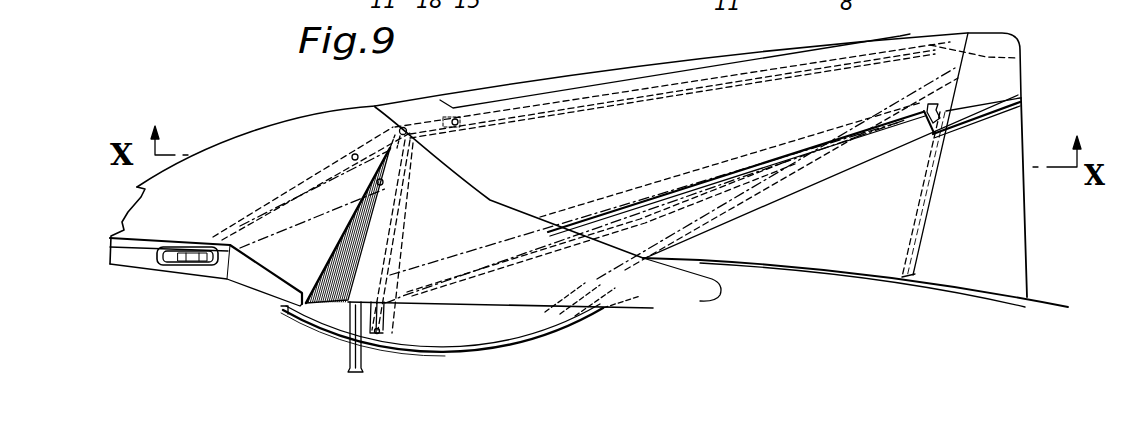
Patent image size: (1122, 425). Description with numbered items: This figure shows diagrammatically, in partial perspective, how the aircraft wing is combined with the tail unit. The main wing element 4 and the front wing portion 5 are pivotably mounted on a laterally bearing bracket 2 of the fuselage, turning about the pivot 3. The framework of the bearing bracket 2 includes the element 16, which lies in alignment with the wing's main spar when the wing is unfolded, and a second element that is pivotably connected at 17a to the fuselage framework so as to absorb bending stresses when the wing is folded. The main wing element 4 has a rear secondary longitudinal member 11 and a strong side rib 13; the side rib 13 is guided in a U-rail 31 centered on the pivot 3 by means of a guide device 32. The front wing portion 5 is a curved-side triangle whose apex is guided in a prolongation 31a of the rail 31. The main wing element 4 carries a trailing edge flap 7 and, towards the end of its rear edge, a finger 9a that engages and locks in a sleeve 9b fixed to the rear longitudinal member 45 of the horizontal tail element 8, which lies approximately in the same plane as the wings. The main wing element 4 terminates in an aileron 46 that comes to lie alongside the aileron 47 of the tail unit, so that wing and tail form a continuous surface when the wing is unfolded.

The bearing bracket 2 is at (503, 213).
The pivot 3 is at (403, 127).
The main wing element 4 is at (595, 100).
The front wing portion 5 is at (280, 137).
The trailing edge flap 7 is at (773, 190).
The horizontal tail element 8 is at (828, 247).
The finger 9a is at (933, 107).
The sleeve 9b is at (1004, 100).
The rear secondary longitudinal member 11 is at (714, 168).
The side rib 13 is at (393, 208).
The bracket framework element 16 is at (347, 360).
The pivotal connection 17a is at (187, 262).
The U-rail 31 is at (433, 342).
The rail prolongation 31a is at (302, 323).
The guide device 32 is at (626, 227).
The rear longitudinal member 45 is at (915, 213).
The wing aileron 46 is at (993, 49).
The tail aileron 47 is at (1010, 216).